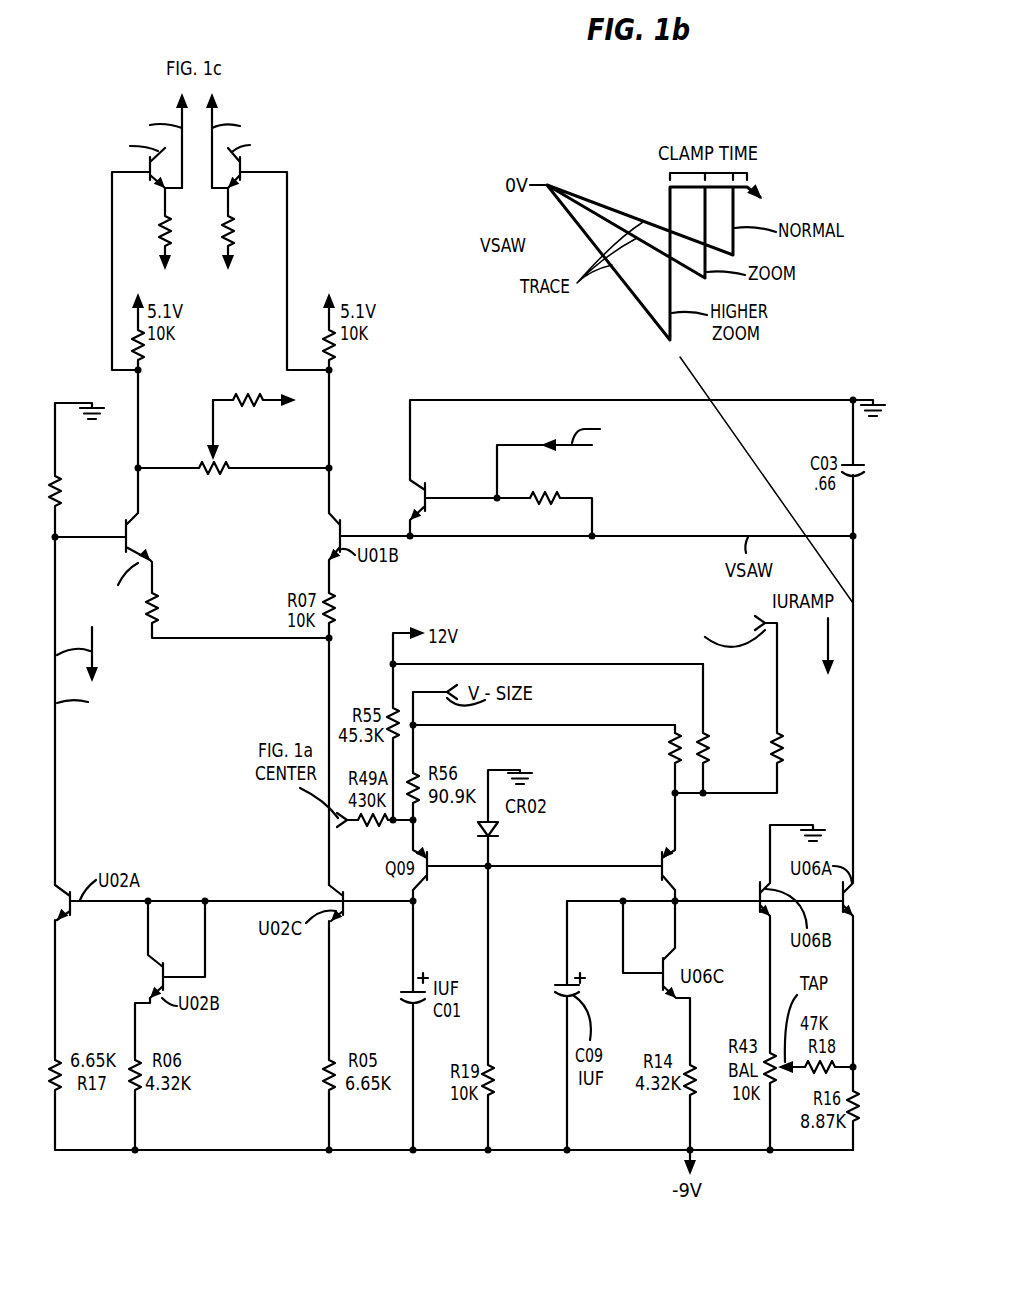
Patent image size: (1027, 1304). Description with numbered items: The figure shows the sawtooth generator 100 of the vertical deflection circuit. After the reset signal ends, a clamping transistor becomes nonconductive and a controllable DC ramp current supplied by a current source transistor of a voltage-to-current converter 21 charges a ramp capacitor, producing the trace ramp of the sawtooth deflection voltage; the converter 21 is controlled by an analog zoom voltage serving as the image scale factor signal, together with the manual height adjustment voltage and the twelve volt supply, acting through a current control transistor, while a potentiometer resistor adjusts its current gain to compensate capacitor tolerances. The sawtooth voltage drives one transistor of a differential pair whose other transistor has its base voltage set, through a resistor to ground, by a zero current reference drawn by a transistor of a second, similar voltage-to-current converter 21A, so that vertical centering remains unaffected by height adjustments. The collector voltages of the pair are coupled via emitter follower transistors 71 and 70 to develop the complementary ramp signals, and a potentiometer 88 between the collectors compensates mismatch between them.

The emitter follower transistor 70 is at (148, 180).
The emitter follower transistor 71 is at (248, 163).
The potentiometer 88 is at (224, 468).
The sawtooth generator 100 is at (553, 581).
The voltage-to-current converter 21 is at (745, 829).
The second voltage-to-current converter 21A is at (140, 801).